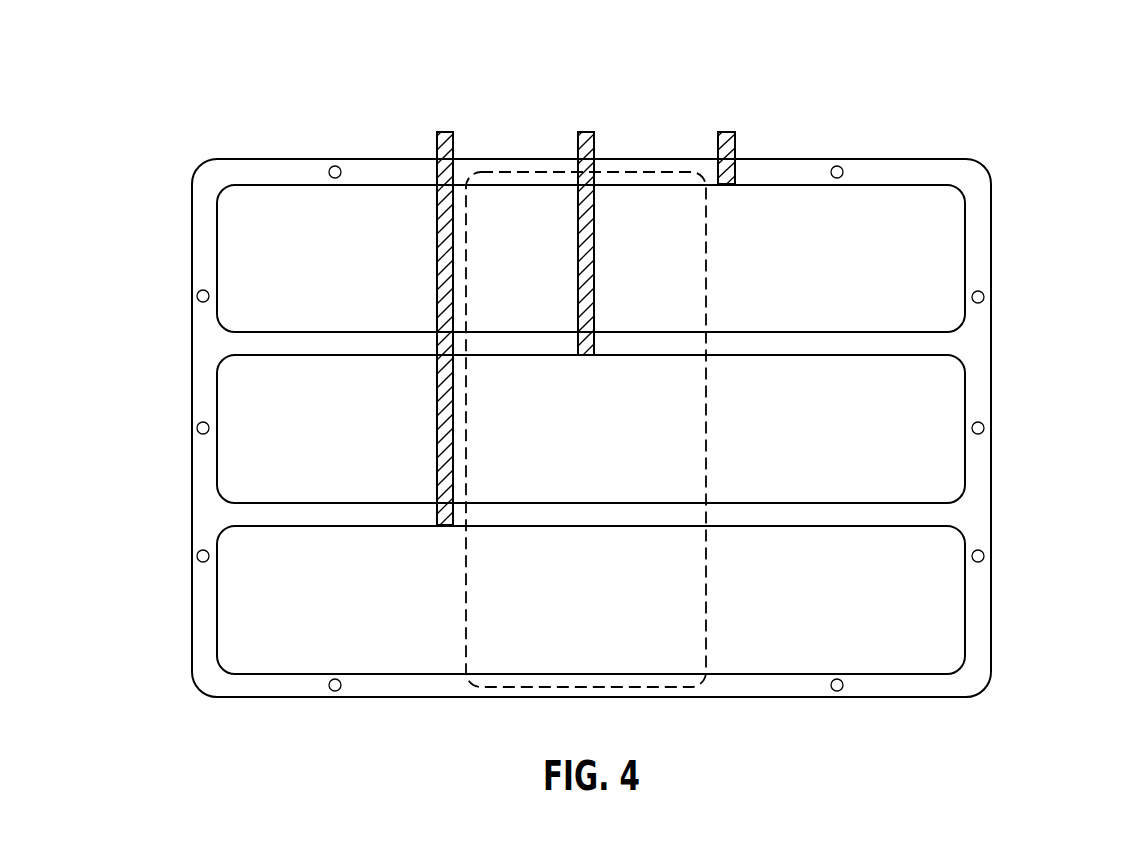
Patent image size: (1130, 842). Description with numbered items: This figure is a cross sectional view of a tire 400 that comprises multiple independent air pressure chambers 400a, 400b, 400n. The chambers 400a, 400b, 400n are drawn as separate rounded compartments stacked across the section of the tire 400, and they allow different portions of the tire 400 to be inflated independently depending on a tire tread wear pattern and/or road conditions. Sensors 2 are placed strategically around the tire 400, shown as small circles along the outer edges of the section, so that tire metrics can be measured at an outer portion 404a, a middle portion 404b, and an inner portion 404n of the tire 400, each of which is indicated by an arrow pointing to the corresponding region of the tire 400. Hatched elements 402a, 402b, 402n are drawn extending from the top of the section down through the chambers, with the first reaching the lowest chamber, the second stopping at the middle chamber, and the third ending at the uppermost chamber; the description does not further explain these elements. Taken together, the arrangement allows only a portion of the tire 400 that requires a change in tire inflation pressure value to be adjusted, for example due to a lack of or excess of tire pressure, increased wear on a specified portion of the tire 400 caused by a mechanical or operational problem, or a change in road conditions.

The tire 400 is at (166, 100).
The independent air pressure chamber 400a is at (228, 245).
The independent air pressure chamber 400b is at (228, 462).
The independent air pressure chamber 400n is at (228, 612).
The first connecting strip 402a is at (443, 132).
The second connecting strip 402b is at (584, 132).
The nth connecting strip 402n is at (726, 132).
The outer portion 404a is at (1008, 221).
The middle portion 404b is at (1009, 375).
The inner portion 404n is at (1007, 525).
The sensors 2 is at (335, 166).